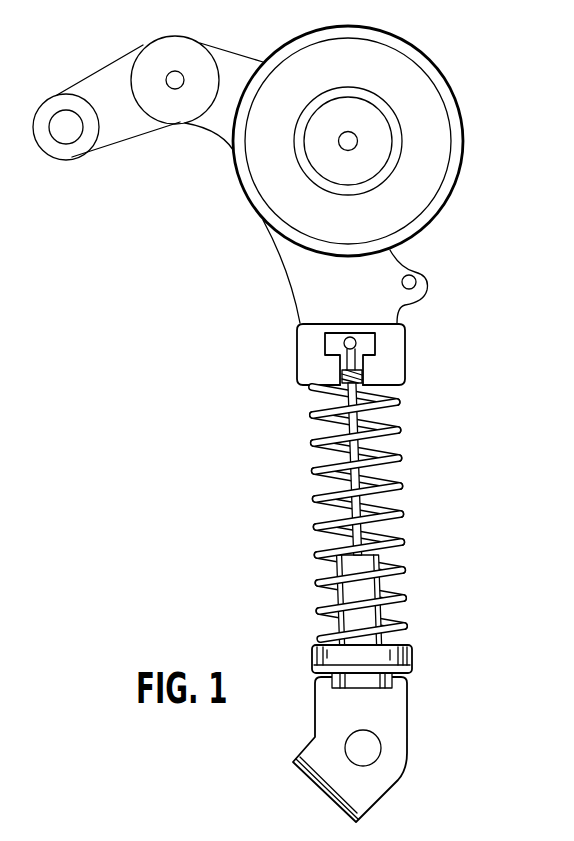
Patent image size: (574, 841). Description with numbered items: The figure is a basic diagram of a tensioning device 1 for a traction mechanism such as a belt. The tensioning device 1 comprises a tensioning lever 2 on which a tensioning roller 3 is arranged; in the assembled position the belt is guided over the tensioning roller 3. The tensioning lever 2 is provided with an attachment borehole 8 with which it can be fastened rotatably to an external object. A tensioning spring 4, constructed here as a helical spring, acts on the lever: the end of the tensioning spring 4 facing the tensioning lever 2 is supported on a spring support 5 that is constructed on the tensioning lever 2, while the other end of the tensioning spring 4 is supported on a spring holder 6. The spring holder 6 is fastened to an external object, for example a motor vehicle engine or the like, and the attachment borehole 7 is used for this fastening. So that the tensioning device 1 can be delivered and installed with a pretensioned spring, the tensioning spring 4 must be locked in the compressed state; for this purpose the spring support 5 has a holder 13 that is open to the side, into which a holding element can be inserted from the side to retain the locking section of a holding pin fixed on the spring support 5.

The tensioning device 1 is at (490, 92).
The tensioning lever 2 is at (293, 257).
The tensioning roller 3 is at (433, 177).
The tensioning spring 4 is at (395, 453).
The spring support 5 is at (397, 349).
The spring holder 6 is at (398, 695).
The attachment borehole 7 is at (375, 752).
The attachment borehole 8 is at (60, 117).
The holder 13 is at (325, 345).